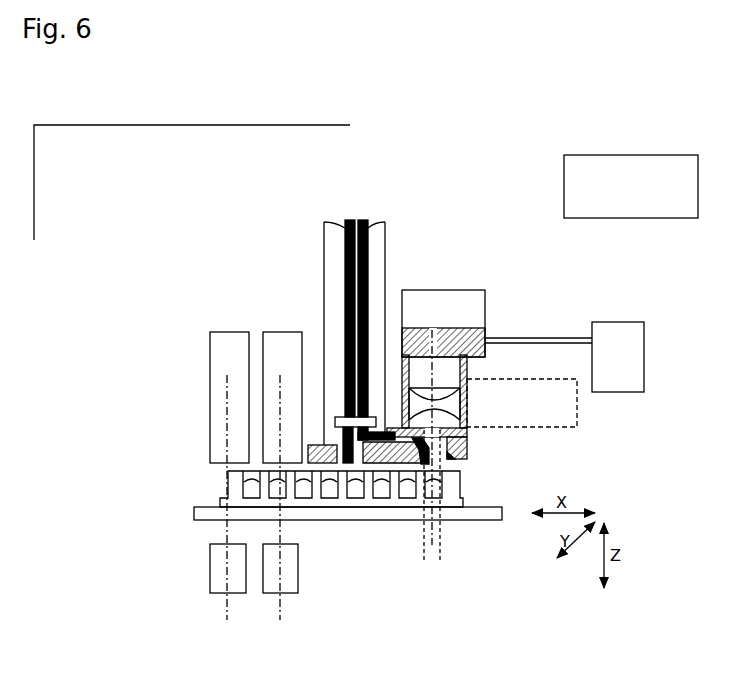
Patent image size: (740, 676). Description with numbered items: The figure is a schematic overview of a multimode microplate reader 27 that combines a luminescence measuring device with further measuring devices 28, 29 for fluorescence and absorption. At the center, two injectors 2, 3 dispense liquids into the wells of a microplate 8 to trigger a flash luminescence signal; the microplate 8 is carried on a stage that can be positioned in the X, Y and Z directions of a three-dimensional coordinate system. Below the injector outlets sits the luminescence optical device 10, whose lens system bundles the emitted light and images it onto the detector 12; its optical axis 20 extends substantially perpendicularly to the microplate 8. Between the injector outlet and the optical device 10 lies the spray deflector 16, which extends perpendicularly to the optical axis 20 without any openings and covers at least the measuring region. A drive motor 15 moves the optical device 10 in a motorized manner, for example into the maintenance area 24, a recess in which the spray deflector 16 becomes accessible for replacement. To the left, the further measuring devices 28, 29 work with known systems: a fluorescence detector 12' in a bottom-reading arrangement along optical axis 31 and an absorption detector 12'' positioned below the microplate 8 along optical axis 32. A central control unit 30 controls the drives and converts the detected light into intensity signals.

The injector 2 is at (375, 250).
The injector 3 is at (333, 250).
The microplate 8 is at (467, 488).
The luminescence optical device 10 is at (493, 325).
The detector 12 is at (443, 323).
The detector for fluorescence 12' is at (196, 580).
The absorption detector 12'' is at (315, 580).
The drive motor 15 is at (628, 364).
The spray deflector 16 is at (468, 458).
The optical axis 20 is at (435, 527).
The maintenance area 24 is at (561, 407).
The microplate reader 27 is at (68, 159).
The measuring device 28 is at (198, 321).
The measuring device 29 is at (265, 321).
The control unit 30 is at (637, 194).
The optical axis 31 is at (226, 600).
The optical axis 32 is at (281, 600).